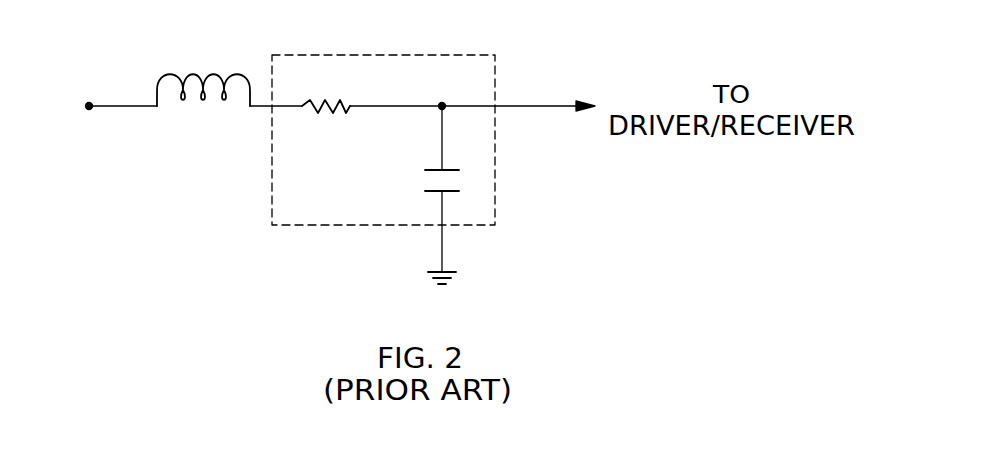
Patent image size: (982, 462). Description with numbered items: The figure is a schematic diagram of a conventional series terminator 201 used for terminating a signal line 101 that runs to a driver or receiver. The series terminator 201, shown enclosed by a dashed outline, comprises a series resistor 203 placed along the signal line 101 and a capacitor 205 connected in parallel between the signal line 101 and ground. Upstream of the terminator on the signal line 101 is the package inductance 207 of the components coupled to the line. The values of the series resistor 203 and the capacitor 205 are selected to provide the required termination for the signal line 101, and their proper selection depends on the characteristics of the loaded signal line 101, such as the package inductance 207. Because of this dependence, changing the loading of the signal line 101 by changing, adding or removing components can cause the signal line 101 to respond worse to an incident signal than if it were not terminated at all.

The signal line 101 is at (122, 104).
The package inductance 207 is at (184, 75).
The series terminator 201 is at (440, 53).
The series resistor 203 is at (347, 111).
The capacitor 205 is at (443, 190).